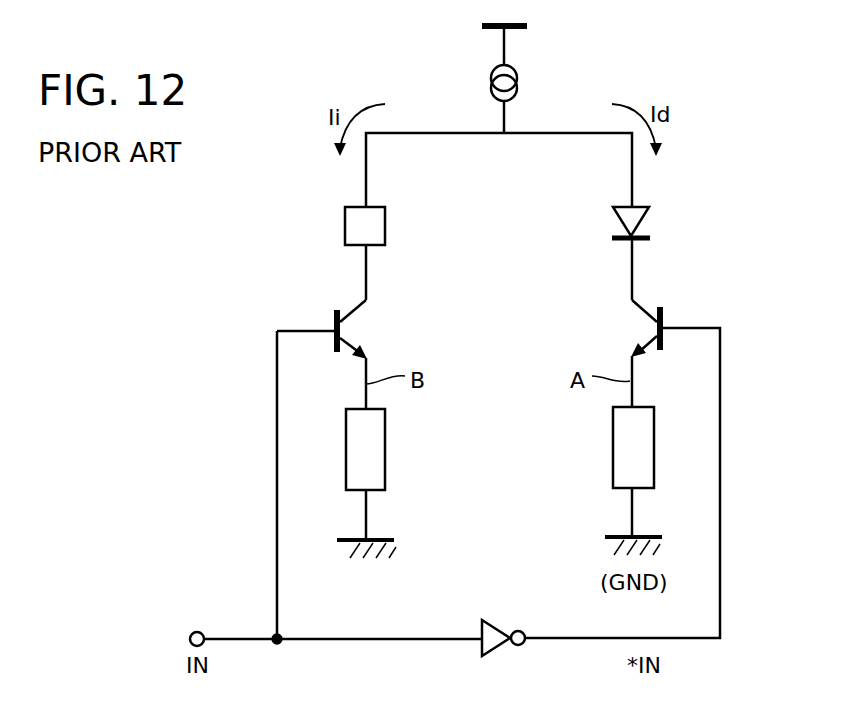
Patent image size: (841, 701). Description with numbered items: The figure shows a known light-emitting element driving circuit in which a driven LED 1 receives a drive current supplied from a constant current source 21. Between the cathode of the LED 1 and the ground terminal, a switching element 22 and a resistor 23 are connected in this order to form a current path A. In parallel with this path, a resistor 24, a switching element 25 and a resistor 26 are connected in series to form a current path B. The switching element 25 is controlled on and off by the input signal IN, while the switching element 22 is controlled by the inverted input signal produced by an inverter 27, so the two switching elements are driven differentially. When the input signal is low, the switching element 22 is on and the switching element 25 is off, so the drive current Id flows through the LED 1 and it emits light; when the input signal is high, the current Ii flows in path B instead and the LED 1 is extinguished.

The LED 1 is at (648, 215).
The constant current source 21 is at (517, 80).
The switching element 22 is at (630, 330).
The resistor 23 is at (612, 457).
The resistor 24 is at (386, 226).
The switching element 25 is at (365, 330).
The resistor 26 is at (386, 460).
The inverter 27 is at (497, 620).